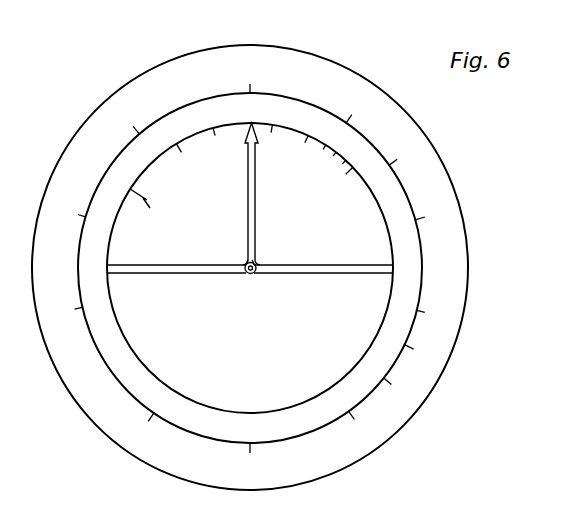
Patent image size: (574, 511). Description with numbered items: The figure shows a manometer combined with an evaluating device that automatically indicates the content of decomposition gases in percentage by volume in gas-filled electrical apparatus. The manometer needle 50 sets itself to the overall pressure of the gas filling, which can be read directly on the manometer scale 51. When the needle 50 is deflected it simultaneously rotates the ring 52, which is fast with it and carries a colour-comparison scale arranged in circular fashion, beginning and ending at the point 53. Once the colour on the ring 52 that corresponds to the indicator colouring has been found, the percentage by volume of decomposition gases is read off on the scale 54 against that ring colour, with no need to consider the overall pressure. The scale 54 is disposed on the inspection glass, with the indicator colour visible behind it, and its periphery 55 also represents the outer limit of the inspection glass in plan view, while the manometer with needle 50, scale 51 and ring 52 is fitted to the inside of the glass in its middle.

The manometer needle 50 is at (256, 224).
The manometer scale 51 is at (333, 148).
The ring 52 is at (300, 107).
The point 53 is at (408, 331).
The scale 54 is at (296, 56).
The periphery 55 is at (468, 293).